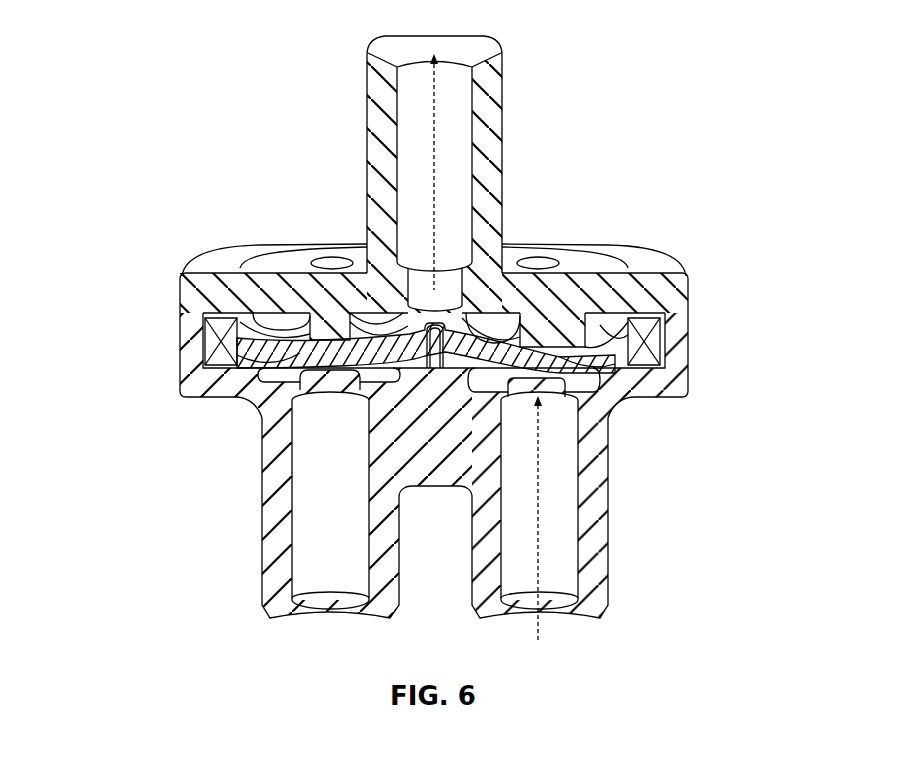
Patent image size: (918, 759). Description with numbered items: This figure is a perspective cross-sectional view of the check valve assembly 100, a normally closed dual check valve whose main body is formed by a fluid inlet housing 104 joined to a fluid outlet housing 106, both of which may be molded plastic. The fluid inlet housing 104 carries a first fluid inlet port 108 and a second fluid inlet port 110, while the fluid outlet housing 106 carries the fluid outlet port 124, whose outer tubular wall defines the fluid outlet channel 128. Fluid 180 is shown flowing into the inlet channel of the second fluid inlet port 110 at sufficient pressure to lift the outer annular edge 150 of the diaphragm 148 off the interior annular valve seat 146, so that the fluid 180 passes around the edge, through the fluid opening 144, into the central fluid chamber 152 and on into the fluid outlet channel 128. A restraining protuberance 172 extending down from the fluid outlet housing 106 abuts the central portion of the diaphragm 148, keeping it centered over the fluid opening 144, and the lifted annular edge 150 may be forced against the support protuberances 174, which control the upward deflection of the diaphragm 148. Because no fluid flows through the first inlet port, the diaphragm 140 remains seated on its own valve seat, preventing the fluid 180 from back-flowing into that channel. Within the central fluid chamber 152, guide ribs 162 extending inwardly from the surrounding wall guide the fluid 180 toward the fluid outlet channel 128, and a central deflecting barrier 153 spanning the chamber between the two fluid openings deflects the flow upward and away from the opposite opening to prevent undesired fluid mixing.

The check valve assembly 100 is at (150, 103).
The fluid inlet housing 104 is at (626, 585).
The fluid outlet housing 106 is at (535, 108).
The first fluid inlet port 108 is at (262, 533).
The second fluid inlet port 110 is at (608, 535).
The fluid outlet port 124 is at (503, 162).
The fluid outlet channel 128 is at (455, 78).
The diaphragm 140 is at (290, 342).
The fluid opening 144 is at (550, 380).
The interior annular valve seat 146 is at (618, 360).
The diaphragm 148 is at (582, 365).
The outer annular edge 150 is at (622, 337).
The central fluid chamber 152 is at (345, 343).
The central deflecting barrier 153 is at (437, 370).
The guide ribs 162 is at (220, 341).
The restraining protuberance 172 is at (540, 330).
The support protuberances 174 is at (600, 317).
The fluid 180 is at (545, 630).